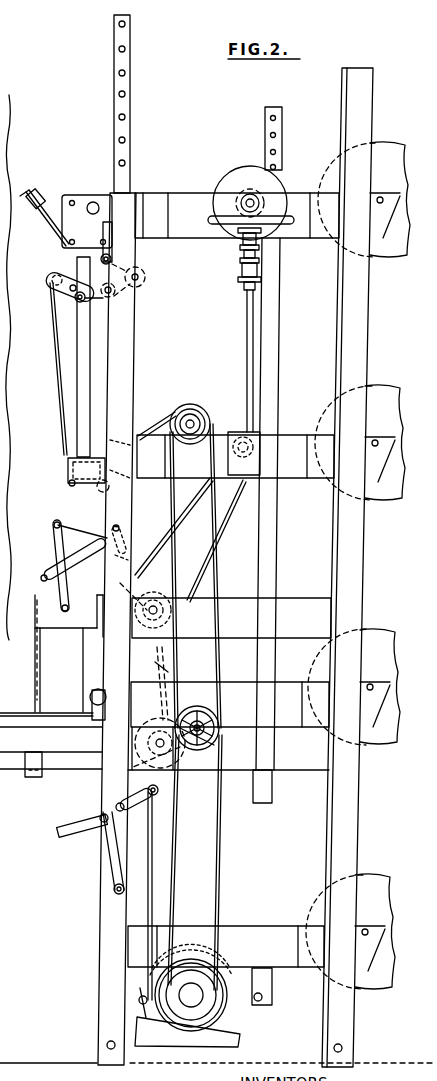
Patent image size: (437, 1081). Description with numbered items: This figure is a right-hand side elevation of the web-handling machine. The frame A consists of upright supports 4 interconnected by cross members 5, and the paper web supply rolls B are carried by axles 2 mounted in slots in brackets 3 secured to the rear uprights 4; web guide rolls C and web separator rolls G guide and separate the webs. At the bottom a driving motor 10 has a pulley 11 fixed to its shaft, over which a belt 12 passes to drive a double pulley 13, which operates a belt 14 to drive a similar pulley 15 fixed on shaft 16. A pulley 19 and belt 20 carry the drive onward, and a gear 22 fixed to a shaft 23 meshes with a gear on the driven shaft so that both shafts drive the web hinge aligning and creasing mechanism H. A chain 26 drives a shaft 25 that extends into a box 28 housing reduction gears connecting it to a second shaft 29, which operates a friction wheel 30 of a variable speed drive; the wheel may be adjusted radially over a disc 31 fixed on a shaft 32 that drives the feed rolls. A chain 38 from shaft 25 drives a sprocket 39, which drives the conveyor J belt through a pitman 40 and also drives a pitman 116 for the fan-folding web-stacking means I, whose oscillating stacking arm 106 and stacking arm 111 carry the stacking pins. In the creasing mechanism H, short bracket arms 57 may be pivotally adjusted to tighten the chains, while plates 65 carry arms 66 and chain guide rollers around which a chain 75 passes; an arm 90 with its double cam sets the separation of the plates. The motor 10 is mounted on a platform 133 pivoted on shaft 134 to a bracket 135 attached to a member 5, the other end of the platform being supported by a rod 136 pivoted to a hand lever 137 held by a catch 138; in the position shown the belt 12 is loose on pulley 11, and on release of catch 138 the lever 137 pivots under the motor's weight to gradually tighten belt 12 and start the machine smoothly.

The axle 2 is at (381, 198).
The bracket 3 is at (382, 565).
The upright support 4 is at (101, 978).
The cross member 5 is at (294, 487).
The driving motor 10 is at (168, 1040).
The pulley 11 is at (195, 970).
The belt 12 is at (220, 888).
The double pulley 13 is at (208, 715).
The belt 14 is at (211, 583).
The pulley 15 is at (196, 408).
The shaft 16 is at (205, 424).
The pulley 19 is at (100, 486).
The belt 20 is at (160, 430).
The gear 22 is at (72, 485).
The shaft 23 is at (66, 466).
The shaft 25 is at (260, 452).
The chain 26 is at (174, 528).
The box 28 is at (247, 480).
The shaft 29 is at (248, 328).
The friction wheel 30 is at (282, 222).
The disc 31 is at (248, 180).
The shaft 32 is at (258, 197).
The chain 38 is at (214, 538).
The sprocket 39 is at (140, 580).
The pitman 40 is at (160, 670).
The bracket arm 57 is at (145, 283).
The plate 65 is at (77, 404).
The arm 66 is at (52, 273).
The chain 75 is at (52, 326).
The arm 90 is at (54, 525).
The oscillating stacking arm 106 is at (52, 587).
The stacking arm 111 is at (44, 576).
The pitman 116 is at (116, 556).
The platform 133 is at (240, 1040).
The shaft 134 is at (265, 1002).
The bracket 135 is at (262, 985).
The rod 136 is at (154, 864).
The hand lever 137 is at (70, 826).
The catch 138 is at (110, 854).
The frame A is at (97, 905).
The paper web supply roll B is at (384, 258).
The web guide roll C is at (277, 150).
The web separator roll G is at (116, 163).
The web hinge aligning and creasing mechanism H is at (52, 365).
The fan-folding web-stacking means I is at (52, 548).
The conveyor J is at (68, 675).